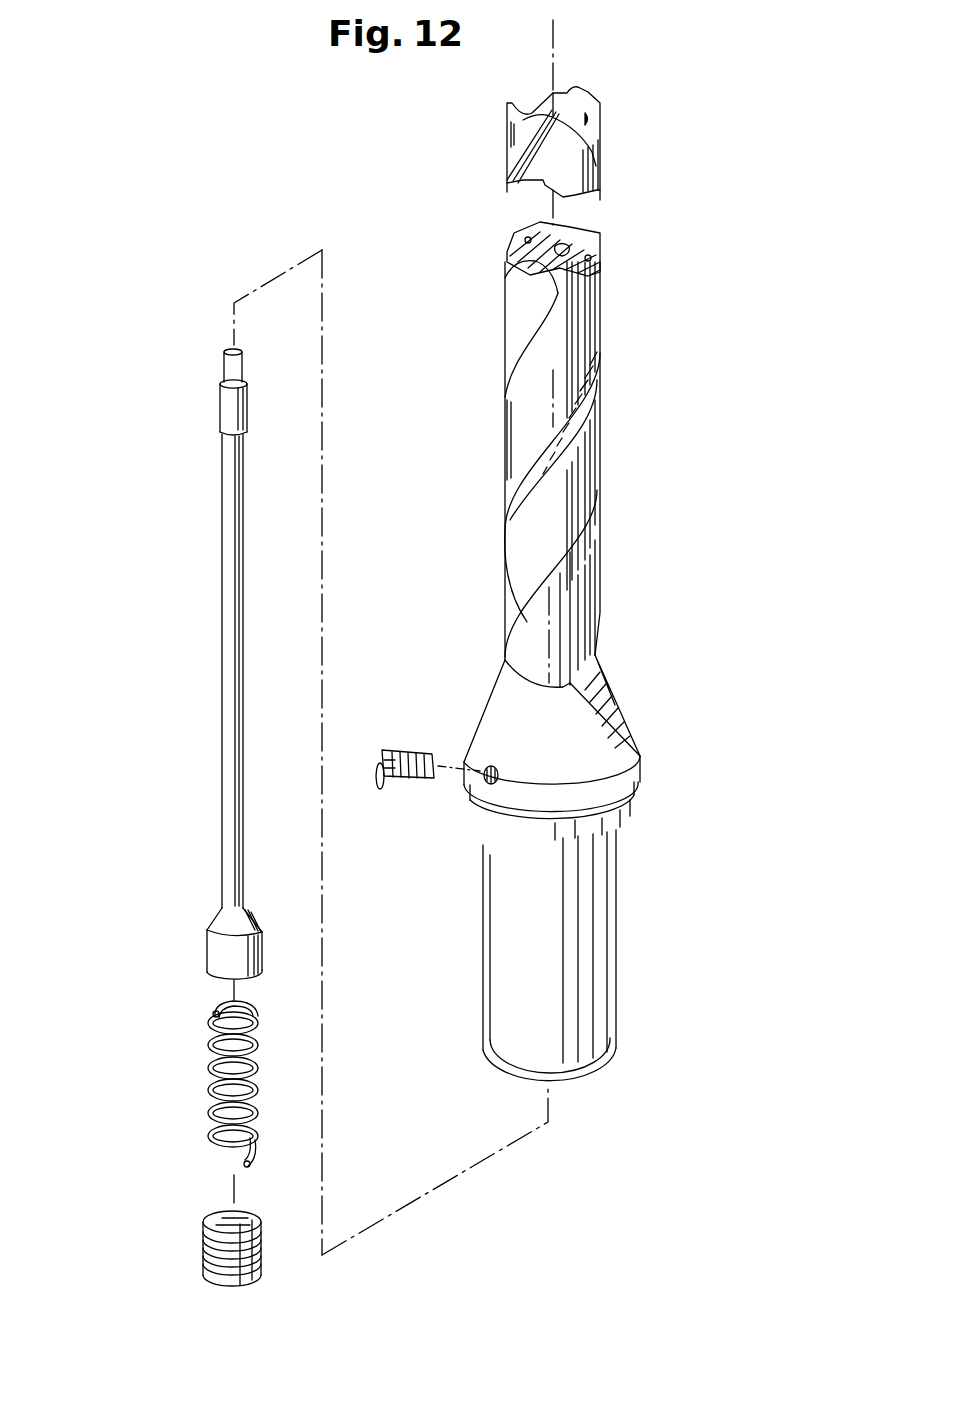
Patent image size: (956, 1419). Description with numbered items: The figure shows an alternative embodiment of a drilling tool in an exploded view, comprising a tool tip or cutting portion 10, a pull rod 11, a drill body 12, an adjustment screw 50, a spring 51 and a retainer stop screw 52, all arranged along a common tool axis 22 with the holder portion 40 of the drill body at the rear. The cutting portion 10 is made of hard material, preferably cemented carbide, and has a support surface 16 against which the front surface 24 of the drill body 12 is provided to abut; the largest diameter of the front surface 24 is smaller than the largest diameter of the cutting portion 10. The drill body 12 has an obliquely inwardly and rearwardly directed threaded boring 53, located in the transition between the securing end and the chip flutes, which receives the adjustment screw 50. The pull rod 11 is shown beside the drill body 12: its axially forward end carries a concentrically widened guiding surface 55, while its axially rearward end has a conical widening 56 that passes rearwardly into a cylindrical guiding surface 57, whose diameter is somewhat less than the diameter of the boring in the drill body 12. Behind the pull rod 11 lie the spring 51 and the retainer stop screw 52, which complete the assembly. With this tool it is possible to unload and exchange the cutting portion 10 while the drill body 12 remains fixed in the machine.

The central axis 22 is at (553, 42).
The cutting portion 10 is at (614, 106).
The support surface 16 is at (528, 198).
The front surface 24 is at (592, 222).
The drill body 12 is at (606, 580).
The adjustment screw 50 is at (421, 742).
The threaded boring 53 is at (487, 781).
The tool holder 40 is at (620, 910).
The guiding surface 55 is at (219, 411).
The pull rod 11 is at (210, 828).
The conical widening 56 is at (222, 922).
The cylindrical guiding surface 57 is at (215, 953).
The spring 51 is at (206, 1056).
The retainer stop screw 52 is at (200, 1240).